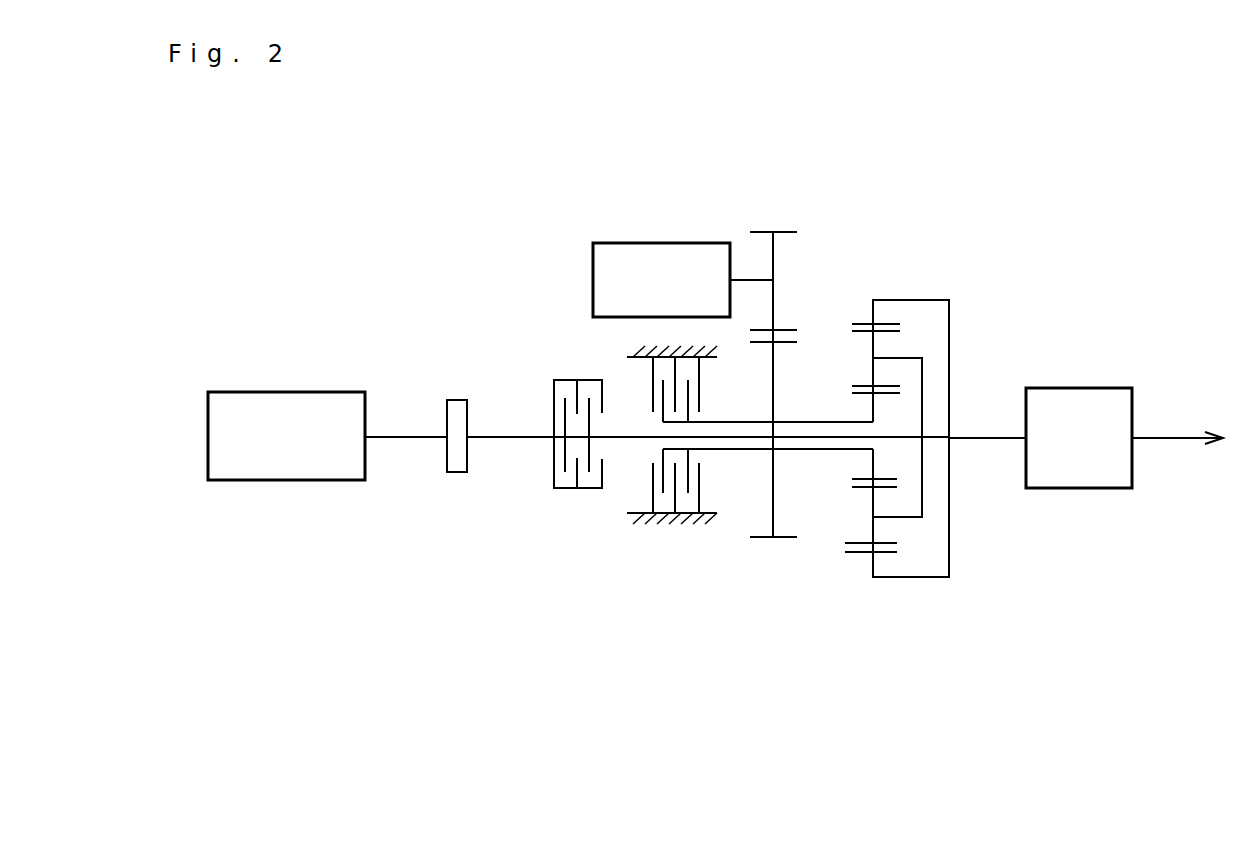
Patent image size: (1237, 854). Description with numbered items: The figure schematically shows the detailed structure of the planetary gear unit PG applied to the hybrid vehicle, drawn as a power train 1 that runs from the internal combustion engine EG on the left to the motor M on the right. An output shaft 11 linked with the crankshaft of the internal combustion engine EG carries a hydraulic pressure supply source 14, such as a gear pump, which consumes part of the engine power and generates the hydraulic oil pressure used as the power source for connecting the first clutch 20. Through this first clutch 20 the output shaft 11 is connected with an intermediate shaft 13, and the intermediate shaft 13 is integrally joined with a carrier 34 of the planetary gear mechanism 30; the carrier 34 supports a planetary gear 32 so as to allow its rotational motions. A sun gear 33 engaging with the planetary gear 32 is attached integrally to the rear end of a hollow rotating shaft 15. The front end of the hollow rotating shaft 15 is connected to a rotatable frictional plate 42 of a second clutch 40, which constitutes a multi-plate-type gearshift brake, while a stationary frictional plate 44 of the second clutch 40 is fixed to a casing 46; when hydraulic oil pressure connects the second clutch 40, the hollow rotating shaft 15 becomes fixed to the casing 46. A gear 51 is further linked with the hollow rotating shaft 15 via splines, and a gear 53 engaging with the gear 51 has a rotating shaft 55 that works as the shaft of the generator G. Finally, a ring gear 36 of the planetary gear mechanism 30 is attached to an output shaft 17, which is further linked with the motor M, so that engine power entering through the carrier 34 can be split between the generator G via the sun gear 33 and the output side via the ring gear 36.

The internal combustion engine EG is at (258, 481).
The output shaft 11 is at (395, 437).
The hydraulic pressure supply source 14 is at (456, 396).
The power output apparatus 1 is at (580, 442).
The first clutch 20 is at (575, 494).
The intermediate shaft 13 is at (620, 442).
The second clutch 40 is at (691, 479).
The rotatable frictional plate 42 is at (689, 420).
The stationary frictional plate 44 is at (700, 493).
The casing 46 is at (703, 534).
The hollow rotating shaft 15 is at (822, 451).
The generator G is at (640, 243).
The rotating shaft 55 is at (752, 278).
The gear 51 is at (774, 362).
The gear 53 is at (775, 257).
The planetary gear unit PG is at (898, 335).
The planetary gear mechanism 30 is at (892, 401).
The ring gear 36 is at (873, 308).
The carrier 34 is at (923, 403).
The planetary gear 32 is at (873, 360).
The sun gear 33 is at (873, 413).
The output shaft 17 is at (973, 452).
The motor M is at (1085, 388).